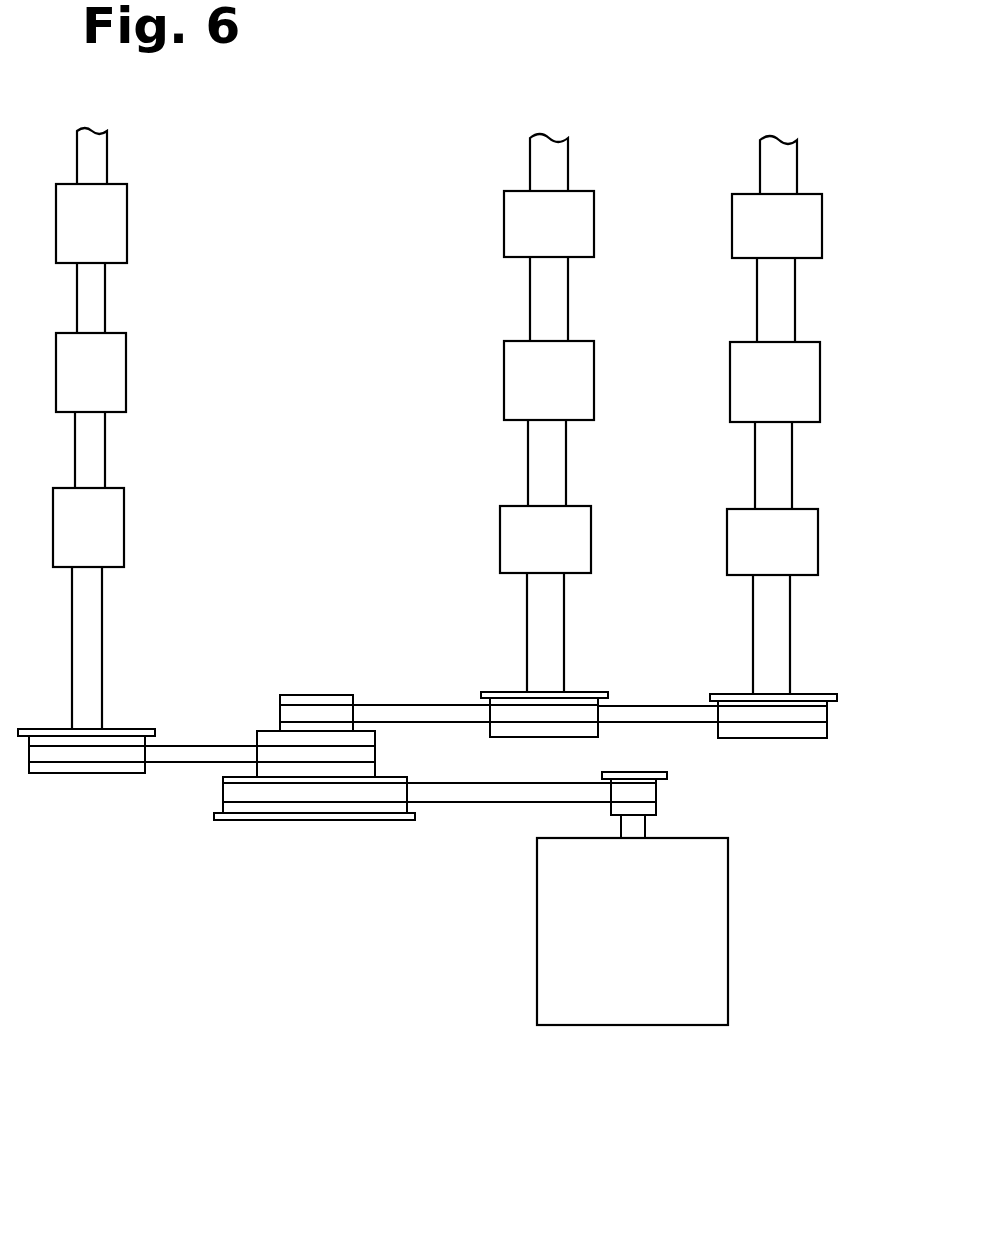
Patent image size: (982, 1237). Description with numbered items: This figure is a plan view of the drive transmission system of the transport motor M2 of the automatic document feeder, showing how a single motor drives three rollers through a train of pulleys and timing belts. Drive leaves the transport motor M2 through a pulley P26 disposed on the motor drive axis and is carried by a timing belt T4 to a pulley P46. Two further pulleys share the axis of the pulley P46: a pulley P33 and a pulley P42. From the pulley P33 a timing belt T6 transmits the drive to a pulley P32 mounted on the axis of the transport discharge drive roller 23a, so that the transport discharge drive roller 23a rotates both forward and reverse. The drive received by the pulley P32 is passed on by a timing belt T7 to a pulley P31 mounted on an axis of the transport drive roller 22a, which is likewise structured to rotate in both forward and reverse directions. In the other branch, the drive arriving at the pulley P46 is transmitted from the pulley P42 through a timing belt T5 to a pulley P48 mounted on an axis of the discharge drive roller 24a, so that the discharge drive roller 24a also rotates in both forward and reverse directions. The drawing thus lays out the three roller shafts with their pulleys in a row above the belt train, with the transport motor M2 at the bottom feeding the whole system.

The discharge drive roller 24a is at (113, 228).
The transport discharge drive roller 23a is at (520, 533).
The transport drive roller 22a is at (748, 225).
The pulley P48 is at (100, 773).
The timing belt T5 is at (195, 762).
The pulley P42 is at (268, 737).
The pulley P33 is at (322, 700).
The timing belt T6 is at (442, 723).
The pulley P32 is at (575, 697).
The timing belt T7 is at (650, 720).
The pulley P31 is at (805, 738).
The pulley P46 is at (338, 810).
The timing belt T4 is at (457, 797).
The pulley P26 is at (657, 808).
The transport motor M2 is at (603, 973).